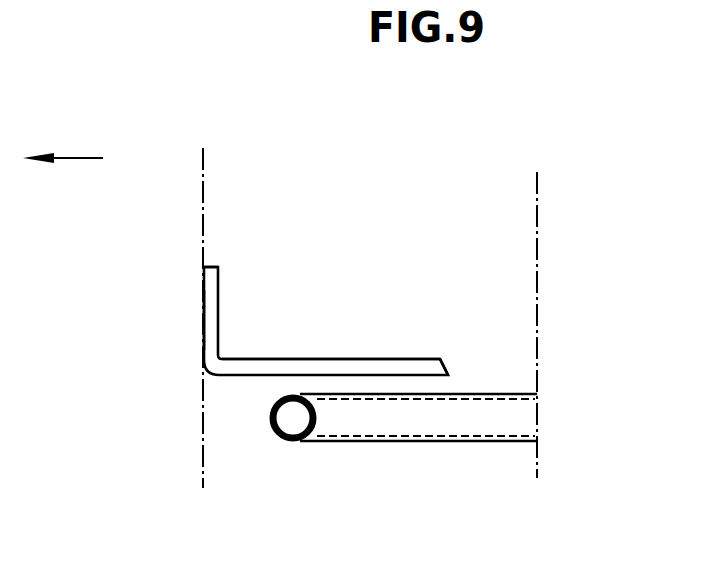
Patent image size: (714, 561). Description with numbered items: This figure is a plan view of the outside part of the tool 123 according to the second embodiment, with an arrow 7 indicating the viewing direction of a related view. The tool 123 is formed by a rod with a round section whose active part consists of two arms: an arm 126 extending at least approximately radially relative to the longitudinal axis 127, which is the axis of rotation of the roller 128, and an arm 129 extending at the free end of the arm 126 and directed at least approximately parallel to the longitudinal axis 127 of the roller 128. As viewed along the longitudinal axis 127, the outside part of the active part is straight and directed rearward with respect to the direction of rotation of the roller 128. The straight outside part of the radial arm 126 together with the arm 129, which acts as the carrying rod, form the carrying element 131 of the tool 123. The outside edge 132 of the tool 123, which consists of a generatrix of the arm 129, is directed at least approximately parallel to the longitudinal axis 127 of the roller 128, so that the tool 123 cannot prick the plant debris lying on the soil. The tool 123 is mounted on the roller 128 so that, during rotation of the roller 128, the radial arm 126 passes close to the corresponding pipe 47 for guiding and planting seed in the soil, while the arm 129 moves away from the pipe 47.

The viewing direction arrow of FIG. 7 is at (82, 158).
The pipe for guiding and planting seed in the soil 47 is at (342, 430).
The tool 123 is at (303, 359).
The arm 126 is at (401, 368).
The longitudinal axis 127 is at (538, 223).
The roller 128 is at (202, 425).
The arm 129 is at (212, 290).
The carrying element 131 is at (203, 340).
The outside edge 132 is at (204, 306).